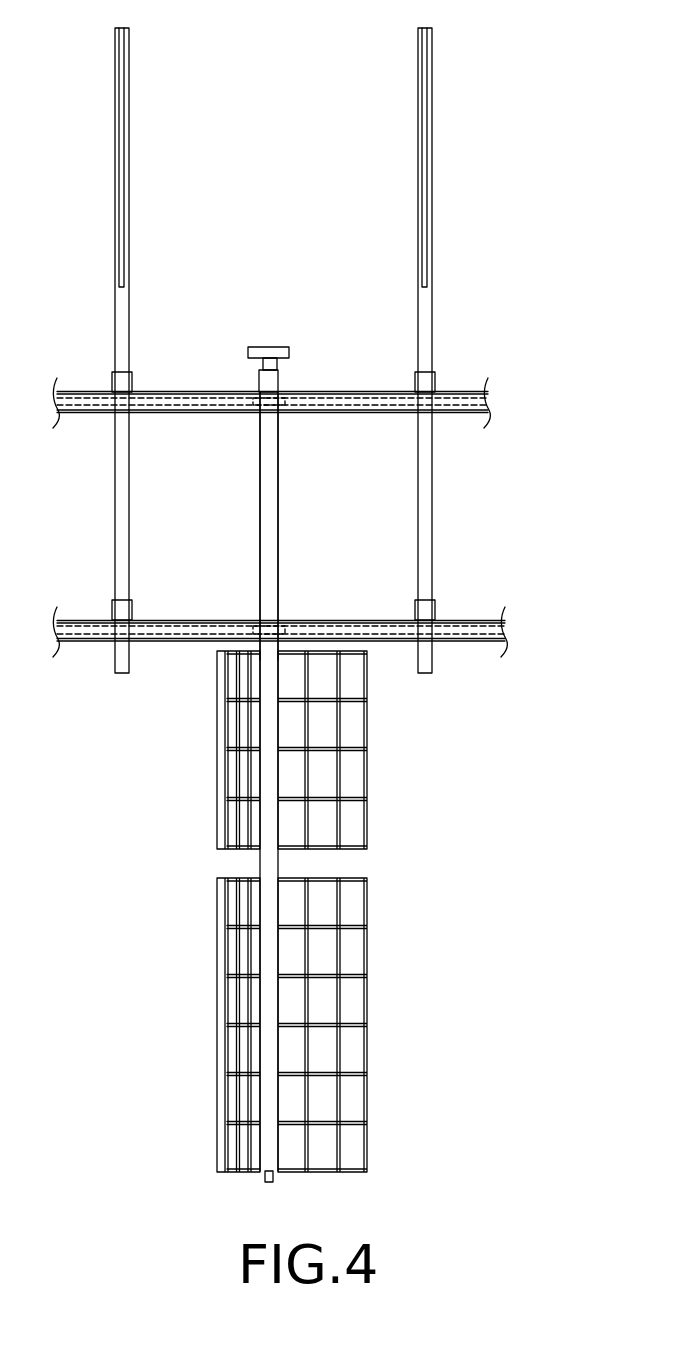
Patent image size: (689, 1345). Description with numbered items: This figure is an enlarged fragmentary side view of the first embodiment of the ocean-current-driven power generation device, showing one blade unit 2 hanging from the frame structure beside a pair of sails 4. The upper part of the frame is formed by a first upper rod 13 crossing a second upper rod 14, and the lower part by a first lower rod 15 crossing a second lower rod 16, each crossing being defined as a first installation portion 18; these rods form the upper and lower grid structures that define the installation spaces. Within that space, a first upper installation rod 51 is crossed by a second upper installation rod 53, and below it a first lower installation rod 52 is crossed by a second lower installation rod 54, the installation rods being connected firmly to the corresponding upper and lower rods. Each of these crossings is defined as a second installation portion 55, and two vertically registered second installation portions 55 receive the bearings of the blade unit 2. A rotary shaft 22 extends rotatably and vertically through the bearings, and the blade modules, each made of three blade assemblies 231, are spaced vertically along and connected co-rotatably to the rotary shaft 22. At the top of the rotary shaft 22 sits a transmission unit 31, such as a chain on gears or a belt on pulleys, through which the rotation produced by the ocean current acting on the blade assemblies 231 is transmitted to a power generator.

The blade unit 2 is at (317, 911).
The sail 4 is at (100, 95).
The first upper rod 13 is at (425, 380).
The second upper rod 14 is at (460, 392).
The first lower rod 15 is at (427, 608).
The second lower rod 16 is at (474, 620).
The first installation portion 18 is at (435, 400).
The rotary shaft 22 is at (268, 861).
The transmission unit 31 is at (258, 349).
The first upper installation rod 51 is at (258, 398).
The first lower installation rod 52 is at (252, 630).
The second upper installation rod 53 is at (345, 397).
The second lower installation rod 54 is at (376, 636).
The second installation portion 55 is at (285, 415).
The blade assembly 231 is at (226, 1050).